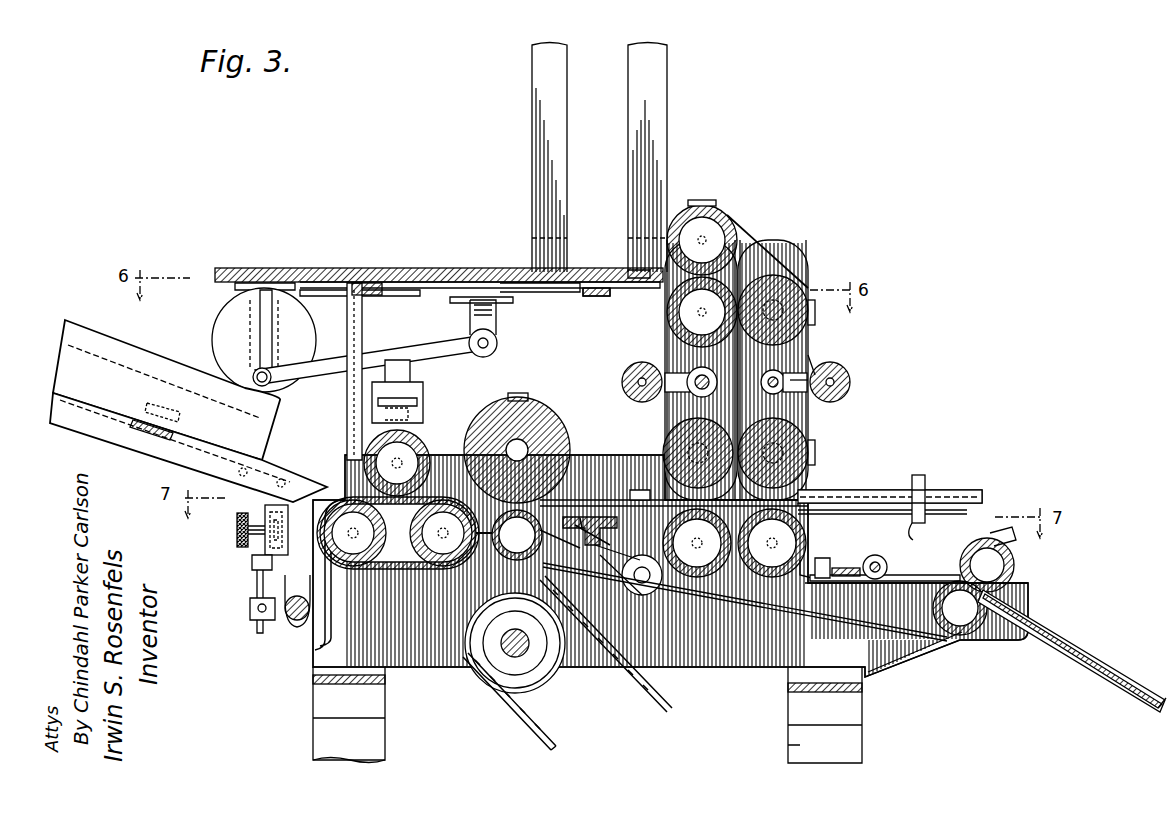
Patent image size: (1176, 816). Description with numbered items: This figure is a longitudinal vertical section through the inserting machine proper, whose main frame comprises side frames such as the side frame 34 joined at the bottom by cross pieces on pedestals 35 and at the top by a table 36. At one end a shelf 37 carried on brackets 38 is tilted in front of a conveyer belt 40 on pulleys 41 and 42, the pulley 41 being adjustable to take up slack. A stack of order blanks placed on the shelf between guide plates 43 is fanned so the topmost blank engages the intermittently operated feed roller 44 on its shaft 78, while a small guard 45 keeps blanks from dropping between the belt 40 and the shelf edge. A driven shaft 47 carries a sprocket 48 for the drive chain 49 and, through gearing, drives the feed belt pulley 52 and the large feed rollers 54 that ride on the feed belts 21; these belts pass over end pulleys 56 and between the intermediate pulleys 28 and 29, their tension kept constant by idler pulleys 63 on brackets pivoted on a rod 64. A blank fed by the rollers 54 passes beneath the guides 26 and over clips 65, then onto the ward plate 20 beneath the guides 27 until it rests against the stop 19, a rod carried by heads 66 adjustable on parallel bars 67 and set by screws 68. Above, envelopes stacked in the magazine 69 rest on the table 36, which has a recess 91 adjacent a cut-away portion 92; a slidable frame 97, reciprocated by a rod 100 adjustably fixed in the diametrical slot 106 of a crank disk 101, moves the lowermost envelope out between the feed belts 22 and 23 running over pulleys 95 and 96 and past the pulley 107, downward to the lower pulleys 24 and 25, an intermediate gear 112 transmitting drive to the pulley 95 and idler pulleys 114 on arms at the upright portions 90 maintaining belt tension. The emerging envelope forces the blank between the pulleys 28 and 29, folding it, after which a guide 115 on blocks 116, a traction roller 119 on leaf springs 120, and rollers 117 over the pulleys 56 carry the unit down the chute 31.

The stop 19 is at (914, 538).
The ward plate 20 is at (852, 512).
The feed belt 21 is at (760, 578).
The feed belt 22 is at (667, 352).
The feed belt 23 is at (772, 258).
The pulley 24 is at (668, 440).
The pulley 25 is at (800, 438).
The guide 26 is at (545, 515).
The guide 27 is at (805, 500).
The pulley 28 is at (697, 578).
The pulley 29 is at (803, 578).
The chute 31 is at (1125, 680).
The side frame 34 is at (400, 600).
The pedestal 35 is at (386, 742).
The table 36 is at (430, 268).
The shelf 37 is at (133, 428).
The bracket 38 is at (238, 498).
The conveyer belt 40 is at (395, 605).
The pulley 41 is at (333, 500).
The pulley 42 is at (450, 580).
The guide plate 43 is at (172, 368).
The feed roller 44 is at (362, 437).
The guard 45 is at (297, 590).
The driven shaft 47 is at (525, 655).
The sprocket 48 is at (520, 695).
The drive chain 49 is at (556, 748).
The feed belt pulley 52 is at (455, 580).
The feed roller 54 is at (540, 405).
The end pulley 56 is at (960, 635).
The idler pulley 63 is at (652, 600).
The rod 64 is at (600, 610).
The clip 65 is at (509, 535).
The head 66 is at (925, 495).
The parallel bar 67 is at (972, 492).
The screw 68 is at (922, 478).
The magazine 69 is at (667, 145).
The shaft 78 is at (415, 437).
The upright portion 90 is at (810, 358).
The recess 91 is at (642, 286).
The cut-away portion 92 is at (660, 272).
The pulley 95 is at (668, 318).
The pulley 96 is at (722, 213).
The frame 97 is at (562, 290).
The rod 100 is at (445, 345).
The crank disk 101 is at (296, 330).
The diametrical slot 106 is at (255, 320).
The pulley 107 is at (776, 275).
The intermediate gear 112 is at (790, 380).
The idler pulley 114 is at (623, 376).
The guide 115 is at (926, 575).
The block 116 is at (818, 560).
The roller 117 is at (1014, 580).
The traction roller 119 is at (885, 562).
The leaf spring 120 is at (848, 568).